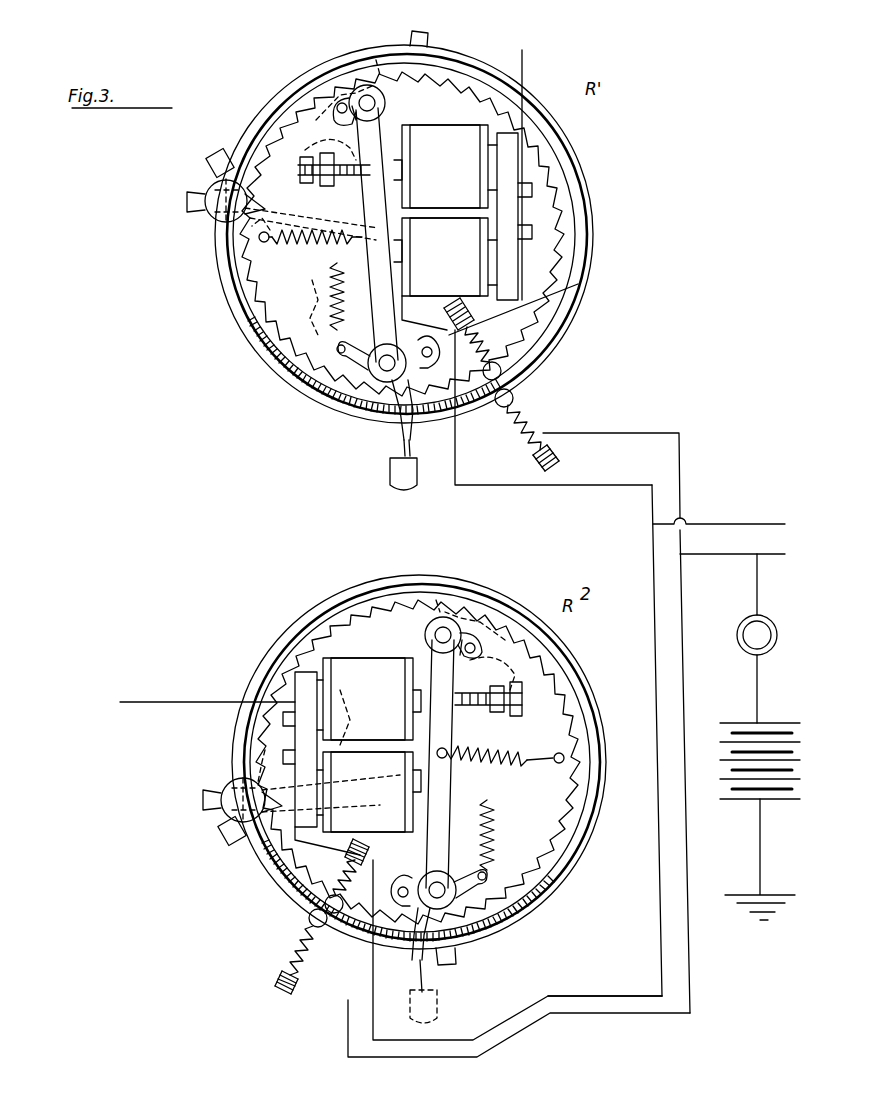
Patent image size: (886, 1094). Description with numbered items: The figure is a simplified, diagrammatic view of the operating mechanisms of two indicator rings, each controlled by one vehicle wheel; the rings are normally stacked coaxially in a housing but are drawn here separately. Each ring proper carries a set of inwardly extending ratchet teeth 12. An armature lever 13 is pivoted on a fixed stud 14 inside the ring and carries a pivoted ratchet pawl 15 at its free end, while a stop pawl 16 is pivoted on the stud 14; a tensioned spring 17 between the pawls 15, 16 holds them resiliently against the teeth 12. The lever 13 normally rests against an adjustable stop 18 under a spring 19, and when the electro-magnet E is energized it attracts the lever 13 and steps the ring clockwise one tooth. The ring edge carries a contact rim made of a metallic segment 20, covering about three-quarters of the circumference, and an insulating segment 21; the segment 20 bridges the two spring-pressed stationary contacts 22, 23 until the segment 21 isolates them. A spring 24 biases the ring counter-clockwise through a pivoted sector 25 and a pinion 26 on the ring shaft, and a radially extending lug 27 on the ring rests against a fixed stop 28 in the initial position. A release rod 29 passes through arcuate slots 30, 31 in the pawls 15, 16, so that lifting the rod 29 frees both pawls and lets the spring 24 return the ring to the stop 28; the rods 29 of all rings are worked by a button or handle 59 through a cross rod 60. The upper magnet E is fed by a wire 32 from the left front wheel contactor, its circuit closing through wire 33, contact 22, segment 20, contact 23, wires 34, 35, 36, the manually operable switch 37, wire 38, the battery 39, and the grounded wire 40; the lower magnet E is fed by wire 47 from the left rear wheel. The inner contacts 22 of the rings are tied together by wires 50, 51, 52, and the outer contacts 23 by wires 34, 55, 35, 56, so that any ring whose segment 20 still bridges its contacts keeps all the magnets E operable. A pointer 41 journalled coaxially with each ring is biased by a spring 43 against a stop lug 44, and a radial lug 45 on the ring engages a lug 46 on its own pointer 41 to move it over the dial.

The ratchet teeth 12 is at (556, 186).
The armature lever 13 is at (372, 296).
The fixed stud 14 is at (385, 365).
The ratchet pawl 15 is at (378, 58).
The stop pawl 16 is at (412, 673).
The tensioned spring 17 is at (344, 298).
The adjustable stop 18 is at (312, 178).
The spring 19 is at (290, 246).
The metallic segment 20 is at (562, 138).
The insulating segment 21 is at (255, 345).
The stationary contact 22 is at (502, 372).
The stationary contact 23 is at (514, 399).
The spring 24 is at (322, 128).
The pivoted sector 25 is at (300, 150).
The pinion 26 is at (422, 236).
The radially extending lug 27 is at (220, 157).
The fixed stop 28 is at (195, 190).
The release rod 29 is at (404, 314).
The arcuate slot 30 is at (343, 98).
The arcuate slot 31 is at (517, 685).
The wire 32 is at (526, 68).
The wire 33 is at (470, 332).
The wire 34 is at (681, 456).
The wire 35 is at (710, 556).
The wire 36 is at (758, 582).
The manually operable switch 37 is at (740, 628).
The wire 38 is at (758, 687).
The battery 39 is at (730, 750).
The wire 40 is at (760, 850).
The pointer 41 is at (210, 214).
The spring 43 is at (315, 300).
The stop lug 44 is at (269, 500).
The radial lug 45 is at (428, 36).
The lug 46 is at (218, 800).
The wire 47 is at (207, 689).
The wire 50 is at (588, 484).
The wire 51 is at (660, 892).
The wire 52 is at (746, 522).
The wire 55 is at (690, 964).
The wire 56 is at (773, 554).
The button or handle 59 is at (390, 480).
The cross rod 60 is at (400, 452).